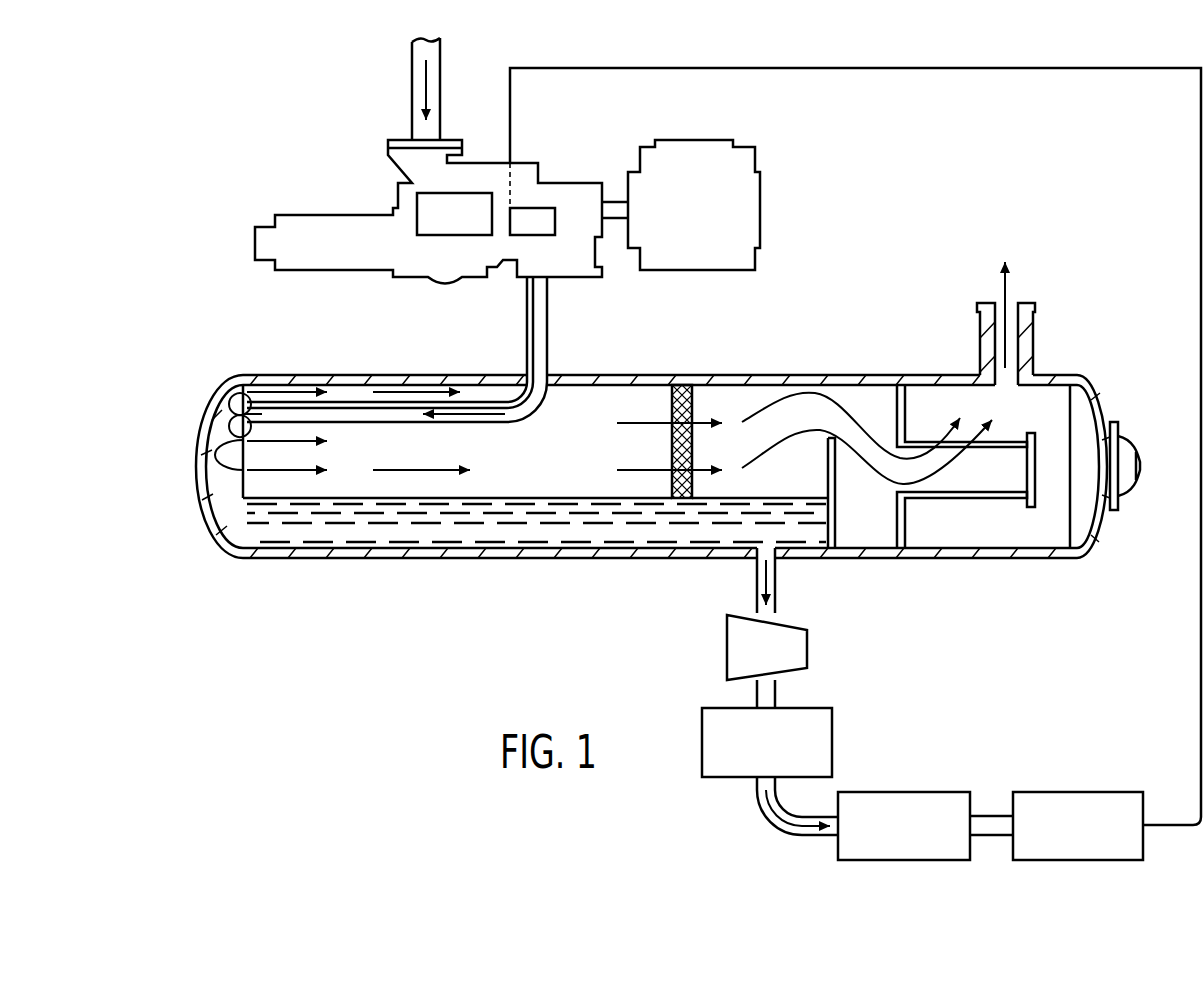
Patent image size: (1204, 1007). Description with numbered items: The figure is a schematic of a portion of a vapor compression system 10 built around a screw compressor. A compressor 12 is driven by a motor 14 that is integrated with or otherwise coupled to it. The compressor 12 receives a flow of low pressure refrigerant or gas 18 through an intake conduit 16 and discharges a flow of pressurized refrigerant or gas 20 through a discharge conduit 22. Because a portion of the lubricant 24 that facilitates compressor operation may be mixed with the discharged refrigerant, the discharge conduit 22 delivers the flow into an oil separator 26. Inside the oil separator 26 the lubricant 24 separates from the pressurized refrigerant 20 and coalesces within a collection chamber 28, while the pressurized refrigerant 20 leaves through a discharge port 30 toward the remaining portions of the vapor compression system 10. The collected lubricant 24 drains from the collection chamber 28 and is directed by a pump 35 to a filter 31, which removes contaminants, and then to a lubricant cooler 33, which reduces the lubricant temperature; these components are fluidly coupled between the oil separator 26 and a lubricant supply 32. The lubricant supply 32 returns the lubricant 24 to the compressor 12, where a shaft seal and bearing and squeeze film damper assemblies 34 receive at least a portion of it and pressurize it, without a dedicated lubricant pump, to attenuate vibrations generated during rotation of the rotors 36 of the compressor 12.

The vapor compression system 10 is at (223, 118).
The compressor 12 is at (335, 270).
The motor 14 is at (738, 193).
The intake conduit 16 is at (440, 92).
The low pressure refrigerant or gas 18 is at (420, 82).
The pressurized refrigerant or gas 20 is at (224, 456).
The discharge conduit 22 is at (547, 315).
The lubricant 24 is at (333, 530).
The oil separator 26 is at (380, 565).
The collection chamber 28 is at (533, 483).
The discharge port 30 is at (1000, 303).
The filter 31 is at (807, 707).
The lubricant supply 32 is at (1080, 792).
The lubricant cooler 33 is at (905, 792).
The squeeze film damper assemblies 34 is at (530, 207).
The pump 35 is at (785, 620).
The rotors 36 is at (417, 213).